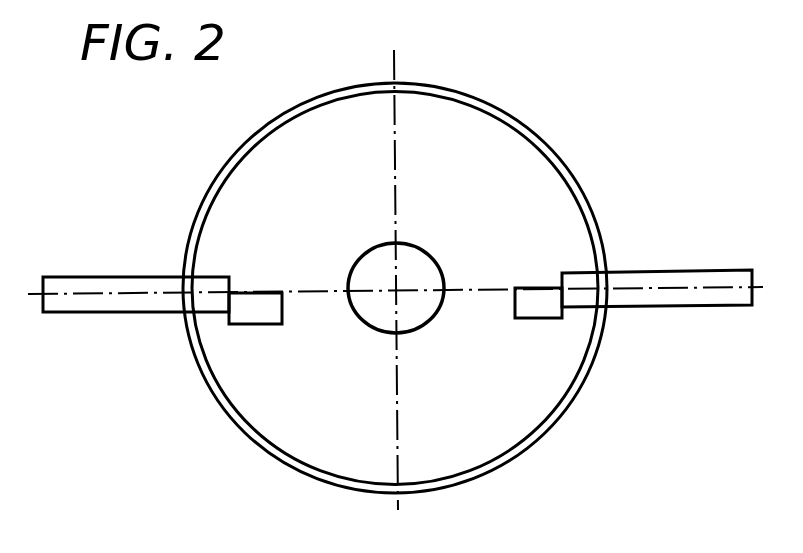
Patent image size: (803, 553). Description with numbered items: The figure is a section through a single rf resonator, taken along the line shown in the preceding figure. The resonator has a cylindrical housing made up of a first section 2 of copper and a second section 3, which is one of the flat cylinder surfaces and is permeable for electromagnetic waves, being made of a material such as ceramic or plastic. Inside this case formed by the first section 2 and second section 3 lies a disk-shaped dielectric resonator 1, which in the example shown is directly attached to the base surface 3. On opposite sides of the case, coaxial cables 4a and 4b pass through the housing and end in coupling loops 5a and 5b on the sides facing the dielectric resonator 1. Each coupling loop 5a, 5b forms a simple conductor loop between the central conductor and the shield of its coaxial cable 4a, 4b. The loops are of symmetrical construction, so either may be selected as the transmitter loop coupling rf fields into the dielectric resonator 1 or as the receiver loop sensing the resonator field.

The dielectric resonator 1 is at (419, 307).
The first section 2 is at (500, 113).
The second section 3 is at (353, 425).
The coaxial cable 4a is at (145, 280).
The coaxial cable 4b is at (658, 287).
The coupling loop 5a is at (247, 325).
The coupling loop 5b is at (550, 320).